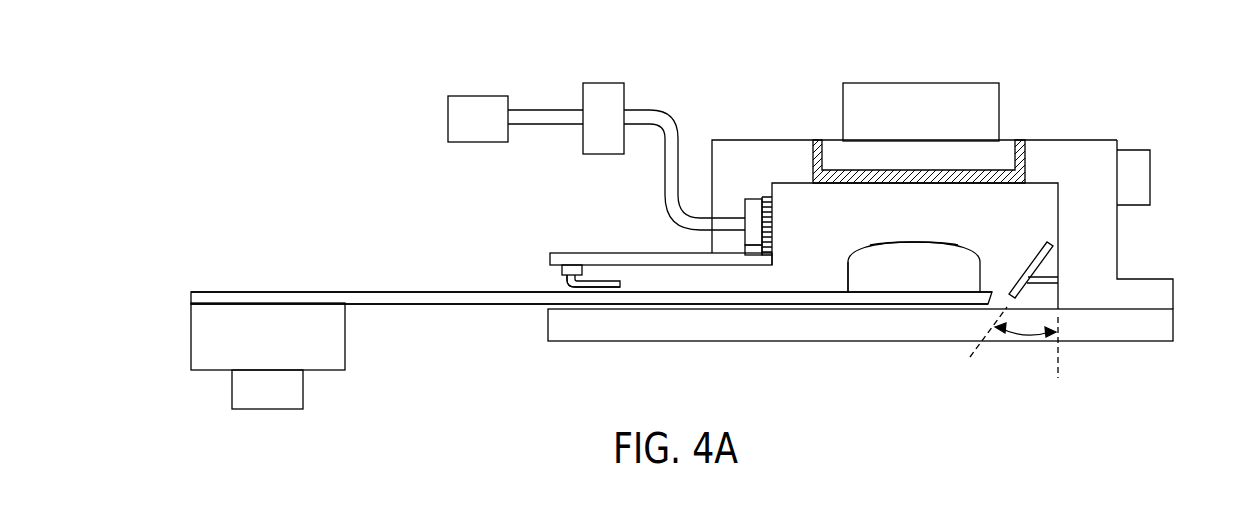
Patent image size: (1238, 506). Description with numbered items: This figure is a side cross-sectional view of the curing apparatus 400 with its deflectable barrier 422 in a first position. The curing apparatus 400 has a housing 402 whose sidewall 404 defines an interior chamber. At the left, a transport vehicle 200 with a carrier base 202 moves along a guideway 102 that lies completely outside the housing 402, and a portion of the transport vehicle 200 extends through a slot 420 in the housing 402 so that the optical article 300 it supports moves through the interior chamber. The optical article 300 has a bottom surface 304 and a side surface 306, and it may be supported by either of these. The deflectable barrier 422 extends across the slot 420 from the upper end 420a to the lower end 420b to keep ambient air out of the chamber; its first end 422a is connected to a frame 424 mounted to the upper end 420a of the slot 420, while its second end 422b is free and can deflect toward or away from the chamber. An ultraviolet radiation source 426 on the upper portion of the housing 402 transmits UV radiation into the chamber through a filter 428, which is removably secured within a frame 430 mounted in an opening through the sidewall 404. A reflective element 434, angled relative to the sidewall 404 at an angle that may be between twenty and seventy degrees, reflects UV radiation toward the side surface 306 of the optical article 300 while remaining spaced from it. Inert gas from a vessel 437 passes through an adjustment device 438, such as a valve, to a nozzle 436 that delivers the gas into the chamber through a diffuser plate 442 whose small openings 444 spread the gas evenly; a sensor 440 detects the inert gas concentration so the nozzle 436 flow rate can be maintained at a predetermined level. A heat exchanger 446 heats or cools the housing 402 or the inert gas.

The guideway 102 is at (263, 393).
The transport vehicle 200 is at (175, 327).
The carrier base 202 is at (210, 358).
The optical article 300 is at (878, 260).
The bottom surface 304 is at (912, 242).
The side surface 306 is at (848, 268).
The curing apparatus 400 is at (1135, 76).
The housing 402 is at (1118, 342).
The sidewall 404 is at (1107, 247).
The slot 420 is at (510, 316).
The upper end 420a is at (552, 258).
The lower end 420b is at (533, 310).
The deflectable barrier 422 is at (610, 277).
The first end 422a is at (573, 287).
The second end 422b is at (623, 283).
The frame 424 is at (573, 268).
The ultraviolet radiation source 426 is at (938, 98).
The filter 428 is at (1005, 183).
The frame 430 is at (1027, 160).
The reflective element 434 is at (1035, 252).
The nozzle 436 is at (727, 205).
The vessel 437 is at (479, 112).
The adjustment device 438 is at (607, 107).
The sensor 440 is at (753, 255).
The diffuser plate 442 is at (763, 197).
The openings 444 is at (773, 207).
The heat exchanger 446 is at (1140, 183).